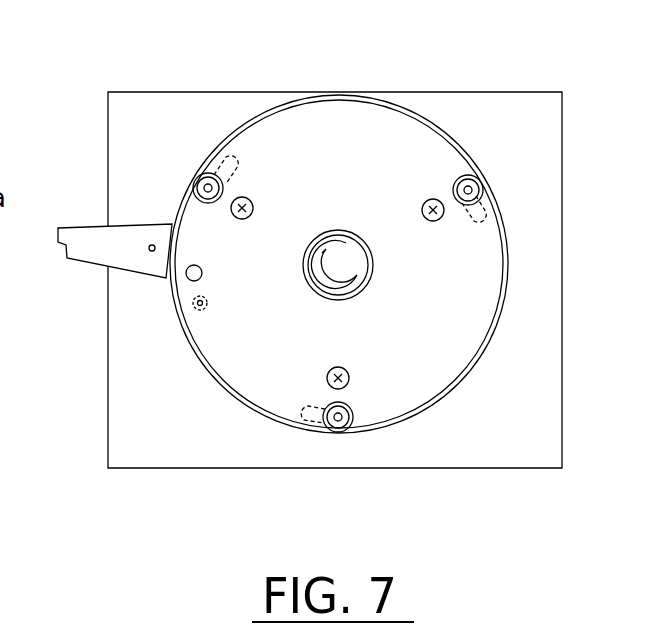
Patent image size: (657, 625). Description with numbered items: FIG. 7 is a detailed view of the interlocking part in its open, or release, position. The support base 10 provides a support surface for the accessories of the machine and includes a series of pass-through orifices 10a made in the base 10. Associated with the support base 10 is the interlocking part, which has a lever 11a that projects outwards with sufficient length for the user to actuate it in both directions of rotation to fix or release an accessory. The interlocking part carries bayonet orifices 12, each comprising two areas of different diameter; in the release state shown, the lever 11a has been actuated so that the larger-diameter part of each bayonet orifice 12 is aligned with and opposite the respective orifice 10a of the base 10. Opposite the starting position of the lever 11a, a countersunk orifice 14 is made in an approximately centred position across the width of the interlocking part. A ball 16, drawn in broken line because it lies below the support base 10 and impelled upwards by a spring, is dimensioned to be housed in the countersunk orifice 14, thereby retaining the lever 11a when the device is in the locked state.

The support base 10 is at (450, 307).
The pass-through orifices 10a is at (205, 186).
The bayonet orifices 12 is at (205, 185).
The lever 11a is at (93, 245).
The countersunk orifice 14 is at (188, 267).
The ball 16 is at (196, 306).